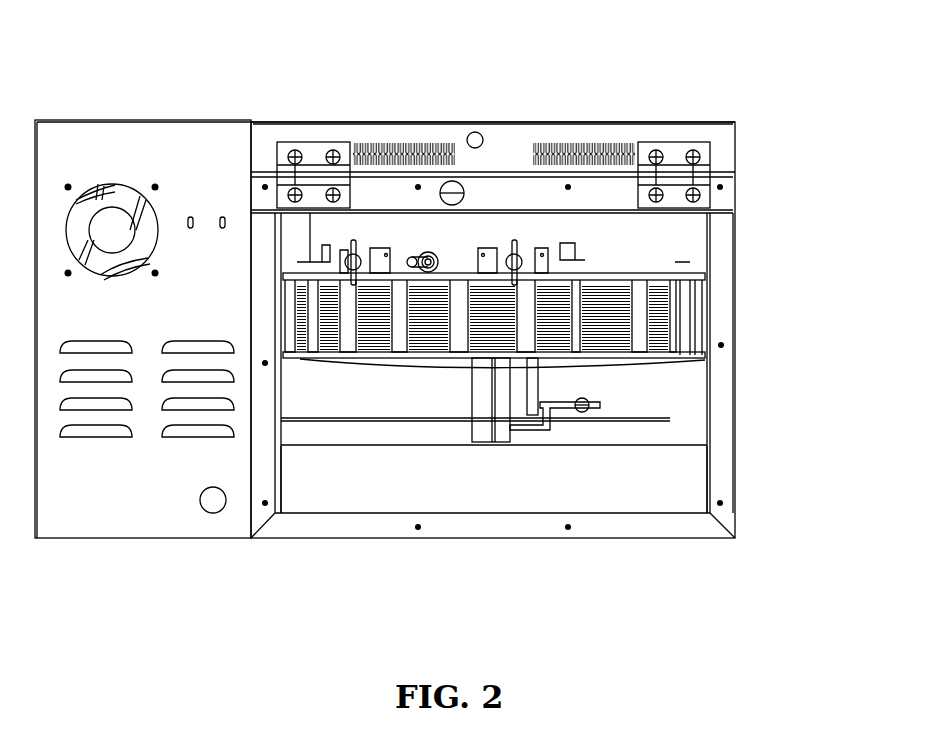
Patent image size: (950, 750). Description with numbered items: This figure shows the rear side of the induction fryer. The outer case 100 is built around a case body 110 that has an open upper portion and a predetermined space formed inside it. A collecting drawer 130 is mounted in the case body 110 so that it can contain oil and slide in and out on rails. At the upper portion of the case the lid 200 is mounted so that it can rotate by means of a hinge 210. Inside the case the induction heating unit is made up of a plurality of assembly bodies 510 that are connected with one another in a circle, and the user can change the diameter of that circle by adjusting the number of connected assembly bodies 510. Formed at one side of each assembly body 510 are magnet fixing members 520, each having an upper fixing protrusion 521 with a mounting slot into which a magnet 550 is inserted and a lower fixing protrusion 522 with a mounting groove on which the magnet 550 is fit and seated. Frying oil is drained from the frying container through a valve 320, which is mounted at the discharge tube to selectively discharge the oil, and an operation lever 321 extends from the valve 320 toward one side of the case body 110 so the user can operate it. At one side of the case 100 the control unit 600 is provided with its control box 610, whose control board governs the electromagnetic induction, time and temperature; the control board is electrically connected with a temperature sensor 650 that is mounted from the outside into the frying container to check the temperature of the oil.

The case 100 is at (733, 541).
The case body 110 is at (735, 218).
The collecting drawer 130 is at (603, 500).
The lid 200 is at (415, 122).
The hinge 210 is at (313, 155).
The valve 320 is at (470, 440).
The operation lever 321 is at (590, 402).
The assembly body 510 is at (545, 272).
The magnet fixing member 520 is at (574, 297).
The upper fixing protrusion 521 is at (585, 278).
The lower fixing protrusion 522 is at (630, 300).
The magnet 550 is at (697, 345).
The control unit 600 is at (62, 120).
The control box 610 is at (150, 121).
The temperature sensor 650 is at (420, 256).